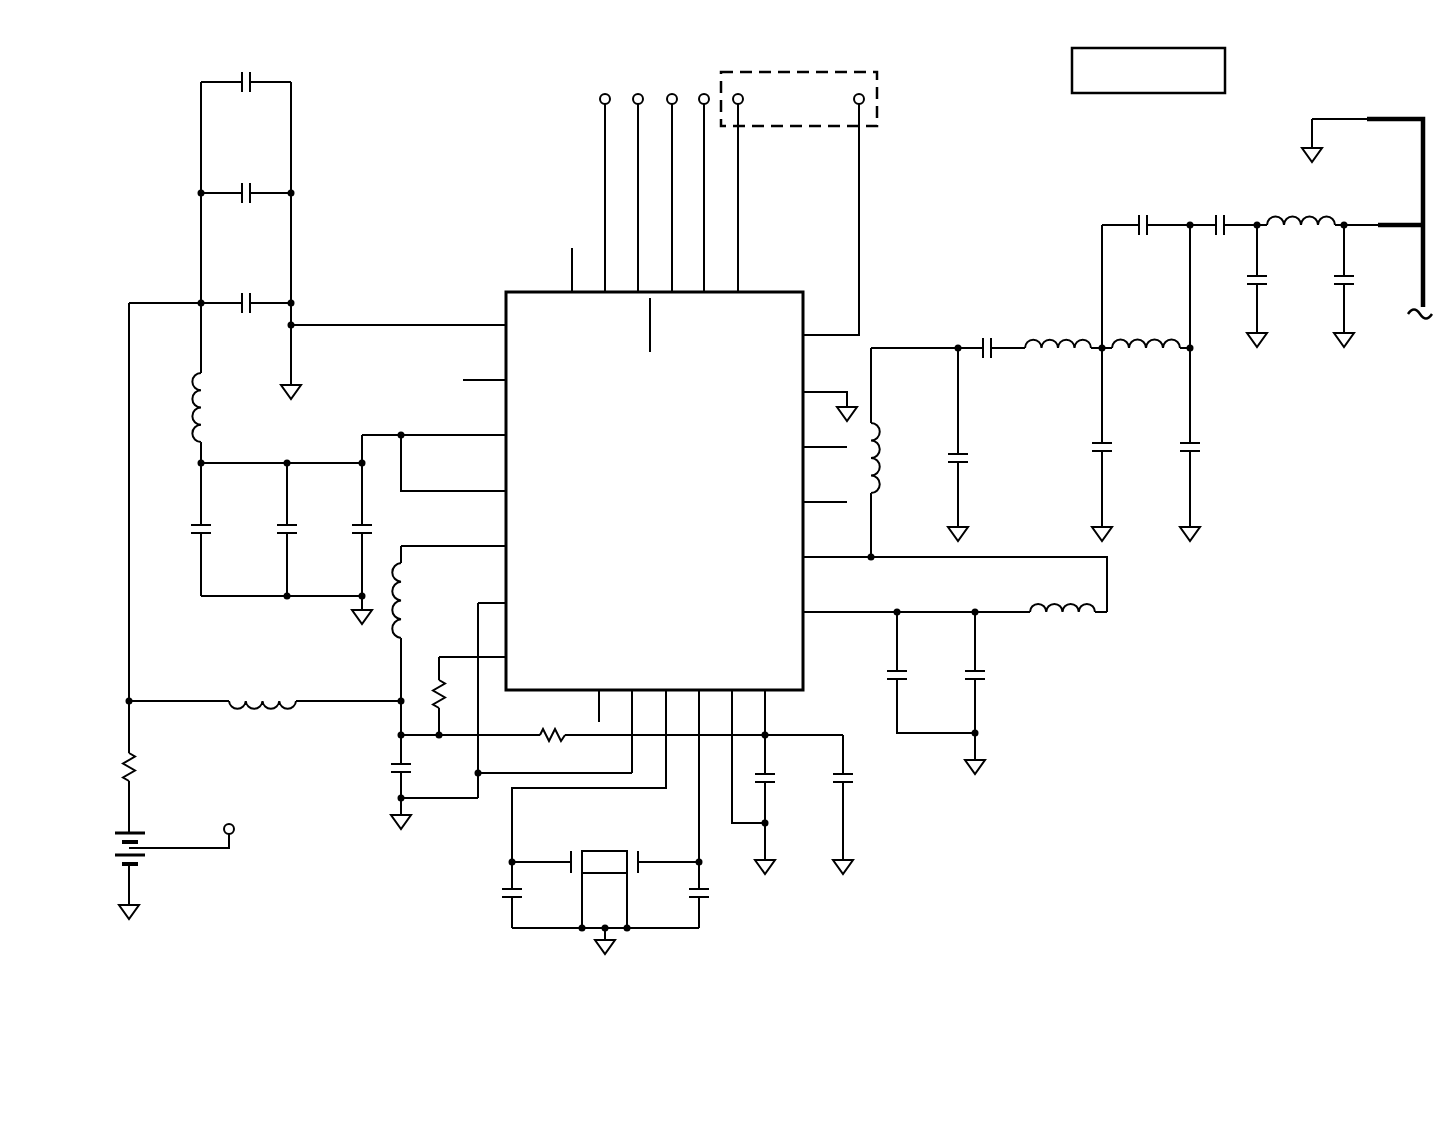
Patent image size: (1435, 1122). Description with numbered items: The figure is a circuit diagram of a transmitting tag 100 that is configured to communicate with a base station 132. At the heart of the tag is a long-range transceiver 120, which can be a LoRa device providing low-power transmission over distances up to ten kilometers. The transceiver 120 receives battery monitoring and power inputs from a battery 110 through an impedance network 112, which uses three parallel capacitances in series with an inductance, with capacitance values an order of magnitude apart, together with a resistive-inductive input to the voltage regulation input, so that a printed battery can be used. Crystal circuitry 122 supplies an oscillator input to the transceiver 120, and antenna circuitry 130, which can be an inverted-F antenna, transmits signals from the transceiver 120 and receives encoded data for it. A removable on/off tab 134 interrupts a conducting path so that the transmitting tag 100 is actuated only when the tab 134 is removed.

The transmitting tag 100 is at (481, 99).
The battery 110 is at (165, 886).
The impedance network 112 is at (108, 340).
The long-range transceiver 120 is at (634, 505).
The crystal circuitry 122 is at (446, 899).
The antenna circuitry 130 is at (1390, 106).
The base station 132 is at (1228, 73).
The removable on/off tab 134 is at (880, 98).